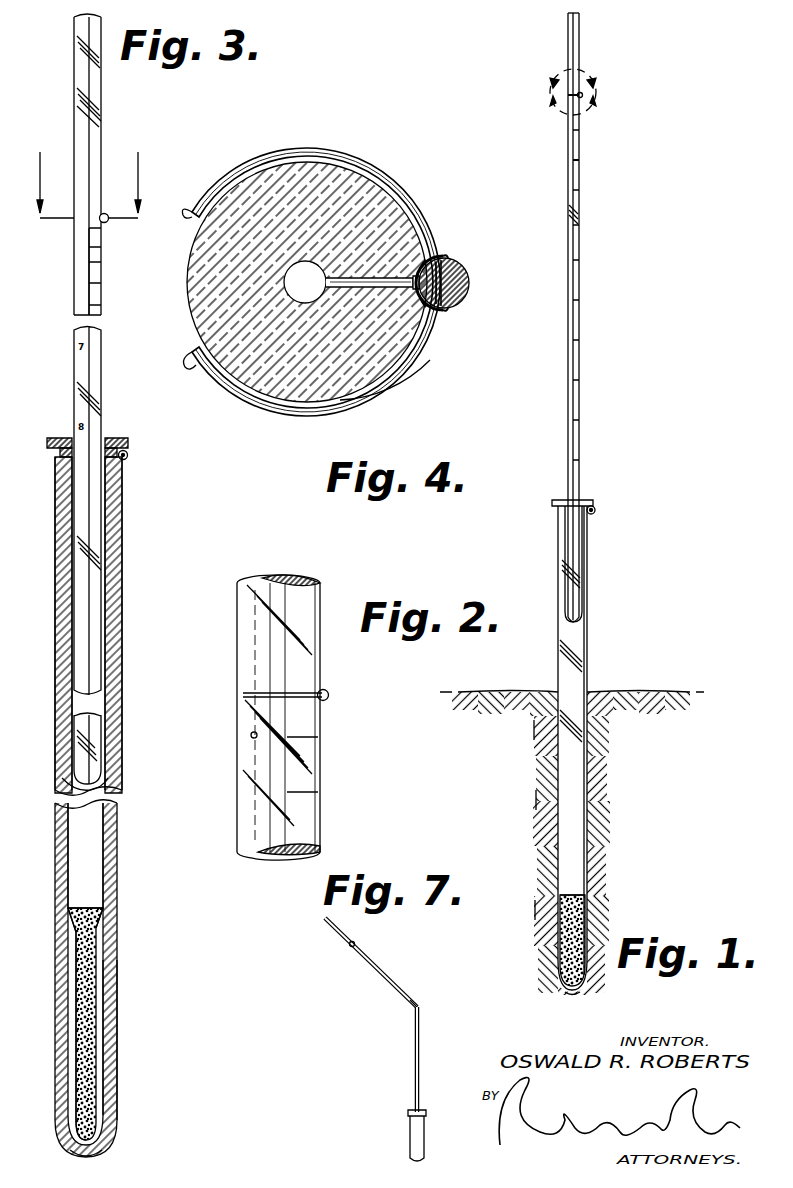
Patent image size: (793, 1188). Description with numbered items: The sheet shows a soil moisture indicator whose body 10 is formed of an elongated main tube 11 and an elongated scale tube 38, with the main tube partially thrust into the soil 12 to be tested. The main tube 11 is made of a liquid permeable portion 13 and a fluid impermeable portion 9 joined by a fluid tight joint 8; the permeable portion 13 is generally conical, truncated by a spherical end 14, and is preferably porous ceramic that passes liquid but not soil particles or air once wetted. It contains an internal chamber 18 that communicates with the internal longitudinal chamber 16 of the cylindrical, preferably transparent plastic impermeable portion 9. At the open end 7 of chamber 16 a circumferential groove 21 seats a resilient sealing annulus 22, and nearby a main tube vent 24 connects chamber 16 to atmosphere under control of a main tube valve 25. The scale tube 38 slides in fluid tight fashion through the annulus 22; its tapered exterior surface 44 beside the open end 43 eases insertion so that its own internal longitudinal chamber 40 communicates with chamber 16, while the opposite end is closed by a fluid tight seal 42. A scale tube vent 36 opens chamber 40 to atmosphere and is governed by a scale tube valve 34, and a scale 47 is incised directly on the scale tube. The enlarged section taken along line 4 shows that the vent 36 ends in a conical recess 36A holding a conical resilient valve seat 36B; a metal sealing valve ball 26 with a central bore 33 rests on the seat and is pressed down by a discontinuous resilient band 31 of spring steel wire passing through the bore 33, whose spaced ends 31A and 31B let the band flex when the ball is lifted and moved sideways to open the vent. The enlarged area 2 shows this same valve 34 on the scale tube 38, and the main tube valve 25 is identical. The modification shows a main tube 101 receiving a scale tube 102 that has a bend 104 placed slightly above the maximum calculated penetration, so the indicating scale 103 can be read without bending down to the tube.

In FIG. 1, the area 2— 2 is at (574, 92).
In FIG. 3, the line 4— 4 is at (87, 175).
In FIG. 3, the open end 7 is at (72, 478).
In FIG. 3, the fluid tight joint 8 is at (74, 912).
In FIG. 3, the fluid impermeable portion 9 is at (110, 750).
In FIG. 1, the fluid impermeable portion 9 is at (560, 692).
In FIG. 1, the body 10 is at (600, 590).
In FIG. 3, the main tube 11 is at (57, 870).
In FIG. 1, the main tube 11 is at (592, 670).
In FIG. 1, the soil 12 is at (535, 940).
In FIG. 3, the liquid permeable portion 13 is at (117, 1040).
In FIG. 1, the liquid permeable portion 13 is at (590, 912).
In FIG. 3, the spherical end 14 is at (100, 1157).
In FIG. 1, the spherical end 14 is at (576, 996).
In FIG. 3, the internal longitudinal chamber 16 is at (90, 833).
In FIG. 3, the internal chamber 18 is at (90, 985).
In FIG. 3, the circumferential groove 21 is at (56, 447).
In FIG. 3, the sealing annulus 22 is at (110, 447).
In FIG. 3, the main tube vent 24 is at (122, 470).
In FIG. 3, the main tube valve 25 is at (129, 455).
In FIG. 1, the main tube valve 25 is at (597, 509).
In FIG. 4, the sealing valve ball 26 is at (460, 296).
In FIG. 4, the discontinuous resilient band 31 is at (412, 366).
In FIG. 4, the spaced end 31A is at (190, 360).
In FIG. 4, the spaced end 31B is at (188, 212).
In FIG. 4, the central bore 33 is at (458, 283).
In FIG. 3, the scale tube valve 34 is at (108, 215).
In FIG. 4, the scale tube valve 34 is at (398, 186).
In FIG. 2, the scale tube valve 34 is at (332, 695).
In FIG. 1, the scale tube valve 34 is at (581, 92).
In FIG. 4, the scale tube vent 36 is at (413, 262).
In FIG. 4, the conical recess 36A is at (432, 265).
In FIG. 4, the conical resilient valve seat 36B is at (432, 305).
In FIG. 3, the scale tube 38 is at (101, 90).
In FIG. 2, the scale tube 38 is at (235, 640).
In FIG. 1, the scale tube 38 is at (580, 258).
In FIG. 3, the internal longitudinal chamber 40 is at (101, 290).
In FIG. 4, the internal longitudinal chamber 40 is at (306, 261).
In FIG. 2, the internal longitudinal chamber 40 is at (280, 578).
In FIG. 3, the fluid tight seal 42 is at (76, 15).
In FIG. 1, the fluid tight seal 42 is at (580, 13).
In FIG. 3, the open end 43 is at (104, 792).
In FIG. 1, the open end 43 is at (586, 622).
In FIG. 3, the tapered exterior surface 44 is at (76, 778).
In FIG. 3, the scale 47 is at (95, 267).
In FIG. 2, the scale 47 is at (302, 788).
In FIG. 1, the scale 47 is at (582, 160).
In FIG. 7, the main tube 101 is at (410, 1132).
In FIG. 7, the scale tube 102 is at (415, 1068).
In FIG. 7, the indicating scale 103 is at (375, 966).
In FIG. 7, the bend 104 is at (412, 1012).